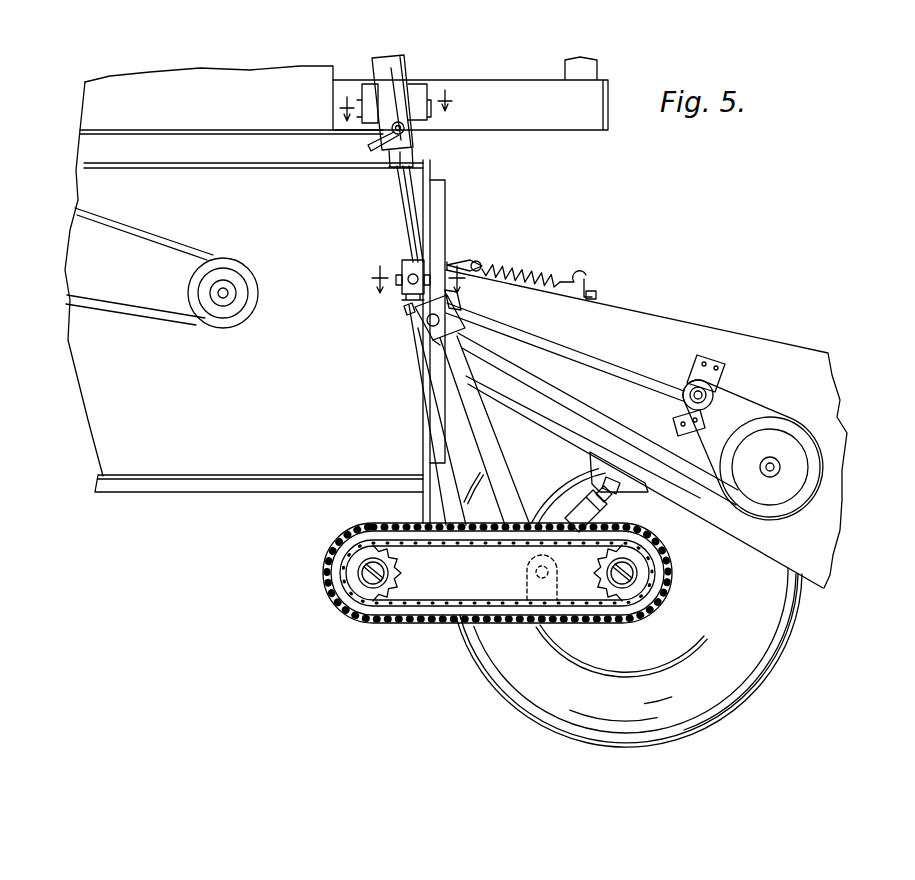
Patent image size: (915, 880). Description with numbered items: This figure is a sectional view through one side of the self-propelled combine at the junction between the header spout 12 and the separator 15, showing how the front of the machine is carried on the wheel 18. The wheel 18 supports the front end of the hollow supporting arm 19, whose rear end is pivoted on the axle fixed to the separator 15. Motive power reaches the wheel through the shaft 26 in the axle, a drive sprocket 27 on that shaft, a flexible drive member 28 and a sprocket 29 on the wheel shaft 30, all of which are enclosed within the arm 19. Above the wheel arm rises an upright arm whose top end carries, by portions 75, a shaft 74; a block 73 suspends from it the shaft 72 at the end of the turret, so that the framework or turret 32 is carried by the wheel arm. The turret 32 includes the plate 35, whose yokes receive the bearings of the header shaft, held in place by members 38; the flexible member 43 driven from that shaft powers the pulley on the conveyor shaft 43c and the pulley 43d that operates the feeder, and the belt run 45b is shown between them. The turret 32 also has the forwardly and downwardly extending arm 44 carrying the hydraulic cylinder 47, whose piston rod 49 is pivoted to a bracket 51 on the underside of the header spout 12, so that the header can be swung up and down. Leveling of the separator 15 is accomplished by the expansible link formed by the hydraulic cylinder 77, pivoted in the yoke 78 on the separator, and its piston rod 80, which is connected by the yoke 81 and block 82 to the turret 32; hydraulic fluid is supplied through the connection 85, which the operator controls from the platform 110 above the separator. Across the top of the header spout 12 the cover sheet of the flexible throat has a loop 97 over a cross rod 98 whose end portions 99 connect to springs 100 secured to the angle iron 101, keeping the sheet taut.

The header spout 12 is at (801, 356).
The separator 15 is at (75, 370).
The wheel 18 is at (778, 650).
The supporting arm 19 is at (440, 624).
The shaft 26 is at (362, 582).
The drive sprocket 27 is at (396, 584).
The flexible drive member 28 is at (500, 546).
The sprocket 29 is at (612, 598).
The shaft 30 is at (632, 577).
The framework (turret) 32 is at (445, 186).
The plate 35 is at (423, 228).
The members 38 is at (488, 436).
The flexible member 43 is at (587, 364).
The shaft 43c is at (690, 392).
The pulley 43d is at (808, 496).
The arm 44 is at (440, 500).
The belt 45b is at (713, 397).
The hydraulic cylinder 47 is at (585, 523).
The piston rod 49 is at (592, 474).
The bracket 51 is at (676, 505).
The shaft 72 is at (434, 322).
The block 73 is at (428, 326).
The shaft 74 is at (412, 314).
The portion 75 is at (428, 326).
The hydraulic cylinder 77 is at (372, 62).
The yoke 78 is at (420, 124).
The piston rod 80 is at (408, 206).
The yoke 81 is at (405, 272).
The block 82 is at (399, 293).
The connection 85 is at (393, 133).
The loop 97 is at (462, 264).
The cross rod 98 is at (468, 272).
The end portion 99 is at (486, 263).
The spring 100 is at (557, 270).
The angle iron 101 is at (596, 298).
The operator's platform 110 is at (513, 88).